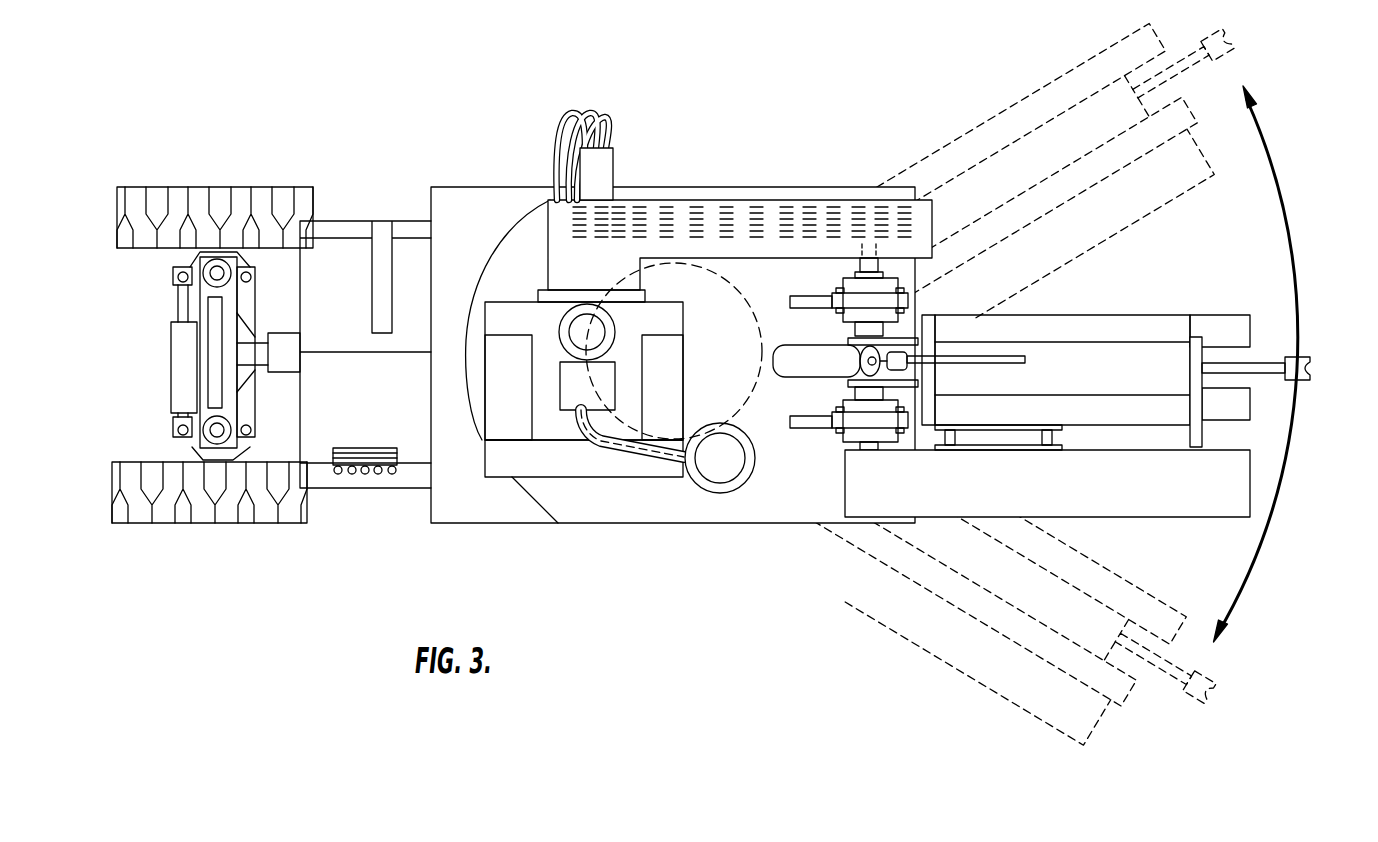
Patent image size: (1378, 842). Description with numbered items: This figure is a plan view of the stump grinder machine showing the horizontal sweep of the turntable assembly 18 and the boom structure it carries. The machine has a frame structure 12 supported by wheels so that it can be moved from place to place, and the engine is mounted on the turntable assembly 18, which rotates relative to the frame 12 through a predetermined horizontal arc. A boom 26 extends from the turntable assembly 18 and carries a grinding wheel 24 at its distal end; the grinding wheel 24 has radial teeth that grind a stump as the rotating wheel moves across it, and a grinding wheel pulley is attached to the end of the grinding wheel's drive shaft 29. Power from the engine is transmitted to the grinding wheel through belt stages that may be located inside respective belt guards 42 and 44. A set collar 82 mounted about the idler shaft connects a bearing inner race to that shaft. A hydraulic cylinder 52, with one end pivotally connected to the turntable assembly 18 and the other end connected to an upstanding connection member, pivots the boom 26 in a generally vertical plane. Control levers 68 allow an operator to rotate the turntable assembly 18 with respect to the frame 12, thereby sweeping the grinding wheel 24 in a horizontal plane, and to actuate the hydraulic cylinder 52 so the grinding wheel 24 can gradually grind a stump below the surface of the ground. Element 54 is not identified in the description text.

The frame structure 12 is at (430, 187).
The turntable assembly 18 is at (740, 272).
The grinding wheel 24 is at (1262, 360).
The boom 26 is at (1150, 314).
The drive shaft 29 is at (1202, 434).
The belt guard 42 is at (833, 199).
The belt guard 44 is at (1150, 517).
The hydraulic cylinder 52 is at (797, 378).
The control cable 54 is at (503, 240).
The control levers 68 is at (350, 478).
The set collar 82 is at (952, 355).